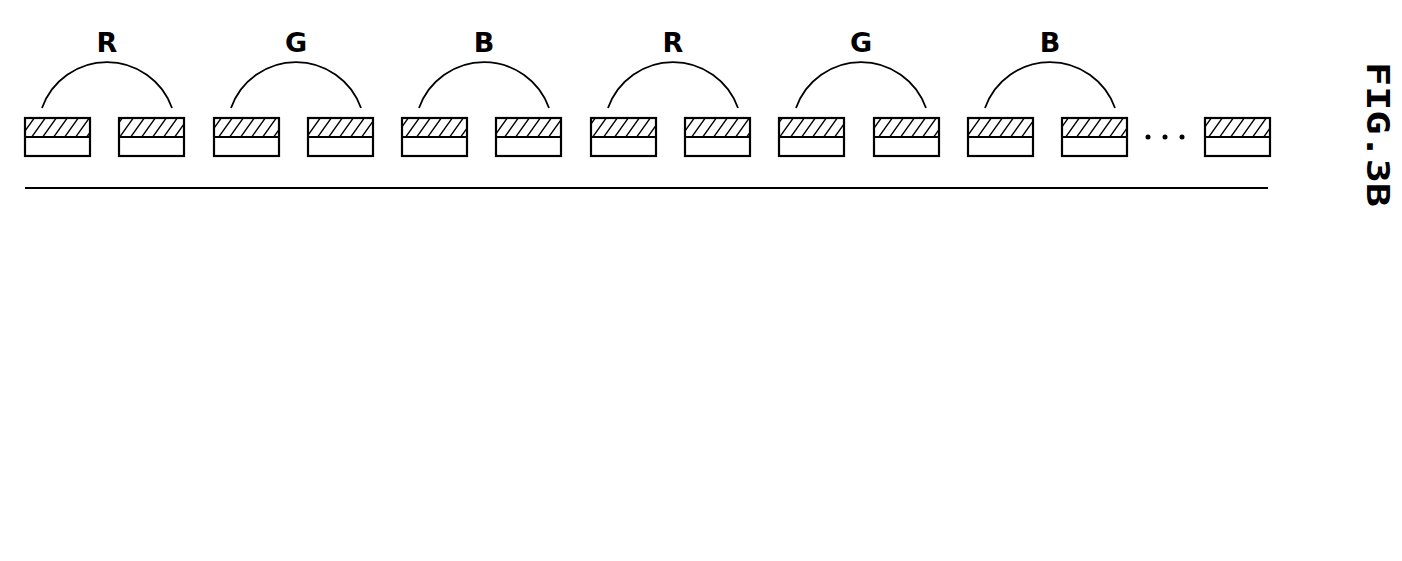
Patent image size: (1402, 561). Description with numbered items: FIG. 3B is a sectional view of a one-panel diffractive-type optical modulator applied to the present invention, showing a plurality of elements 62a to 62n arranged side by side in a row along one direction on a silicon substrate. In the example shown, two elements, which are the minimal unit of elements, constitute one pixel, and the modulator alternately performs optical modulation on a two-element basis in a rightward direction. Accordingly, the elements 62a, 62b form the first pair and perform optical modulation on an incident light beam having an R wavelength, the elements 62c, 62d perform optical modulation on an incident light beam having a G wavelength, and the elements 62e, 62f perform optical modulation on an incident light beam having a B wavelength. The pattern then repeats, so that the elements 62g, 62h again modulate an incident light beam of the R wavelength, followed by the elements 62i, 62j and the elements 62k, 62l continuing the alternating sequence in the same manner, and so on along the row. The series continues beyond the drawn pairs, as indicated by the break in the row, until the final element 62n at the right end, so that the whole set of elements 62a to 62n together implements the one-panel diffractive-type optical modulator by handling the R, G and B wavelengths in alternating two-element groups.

The element 62a is at (58, 156).
The element 62b is at (152, 156).
The element 62c is at (247, 156).
The element 62d is at (341, 156).
The element 62e is at (435, 156).
The element 62f is at (529, 156).
The element 62g is at (624, 156).
The element 62h is at (718, 156).
The element 62i is at (812, 156).
The element 62j is at (907, 156).
The element 62k is at (1001, 156).
The element 62l is at (1095, 156).
The element 62n is at (1238, 156).